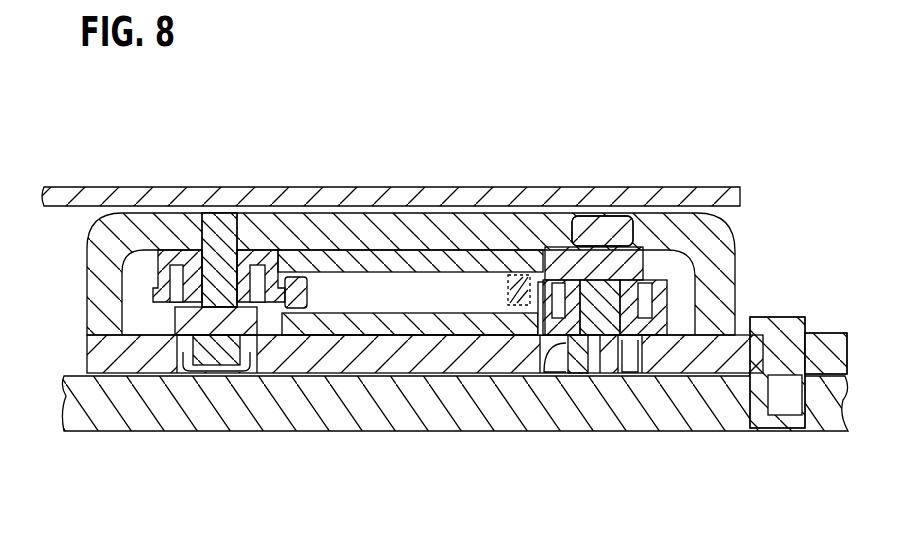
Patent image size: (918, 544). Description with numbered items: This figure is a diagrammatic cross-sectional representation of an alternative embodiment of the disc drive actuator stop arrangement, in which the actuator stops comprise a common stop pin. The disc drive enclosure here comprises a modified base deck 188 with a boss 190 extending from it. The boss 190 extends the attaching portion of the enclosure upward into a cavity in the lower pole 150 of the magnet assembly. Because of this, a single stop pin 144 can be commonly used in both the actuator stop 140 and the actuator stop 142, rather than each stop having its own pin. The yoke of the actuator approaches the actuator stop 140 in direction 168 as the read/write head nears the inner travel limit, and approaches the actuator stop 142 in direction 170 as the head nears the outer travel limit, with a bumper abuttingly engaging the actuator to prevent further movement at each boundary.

The actuator stop 140 is at (150, 325).
The actuator stop 142 is at (655, 230).
The stop pin 144 is at (215, 278).
The lower pole 150 is at (402, 358).
The base deck 188 is at (290, 407).
The boss 190 is at (542, 372).
The direction 168 is at (320, 290).
The direction 170 is at (496, 290).